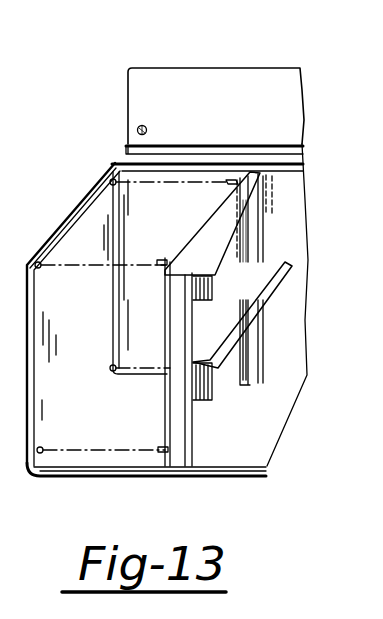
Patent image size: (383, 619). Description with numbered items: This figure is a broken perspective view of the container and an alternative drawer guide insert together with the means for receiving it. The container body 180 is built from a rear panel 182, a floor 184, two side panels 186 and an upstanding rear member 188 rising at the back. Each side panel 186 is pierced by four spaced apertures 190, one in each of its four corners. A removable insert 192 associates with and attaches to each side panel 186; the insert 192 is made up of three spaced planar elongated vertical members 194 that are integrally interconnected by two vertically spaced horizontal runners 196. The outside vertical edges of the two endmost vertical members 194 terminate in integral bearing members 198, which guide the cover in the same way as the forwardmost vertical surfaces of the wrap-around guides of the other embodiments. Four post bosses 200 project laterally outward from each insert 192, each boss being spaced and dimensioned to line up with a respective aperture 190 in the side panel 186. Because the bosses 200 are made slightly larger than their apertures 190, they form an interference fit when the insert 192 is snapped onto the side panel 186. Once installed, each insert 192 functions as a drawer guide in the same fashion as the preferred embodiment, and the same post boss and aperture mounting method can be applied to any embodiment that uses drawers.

The container body 180 is at (103, 172).
The rear panel 182 is at (306, 315).
The floor 184 is at (261, 476).
The side panel 186 is at (63, 223).
The upstanding rear member 188 is at (202, 75).
The apertures 190 is at (112, 184).
The insert 192 is at (198, 234).
The vertical members 194 is at (215, 388).
The horizontal runners 196 is at (266, 216).
The bearing members 198 is at (266, 262).
The post bosses 200 is at (228, 182).